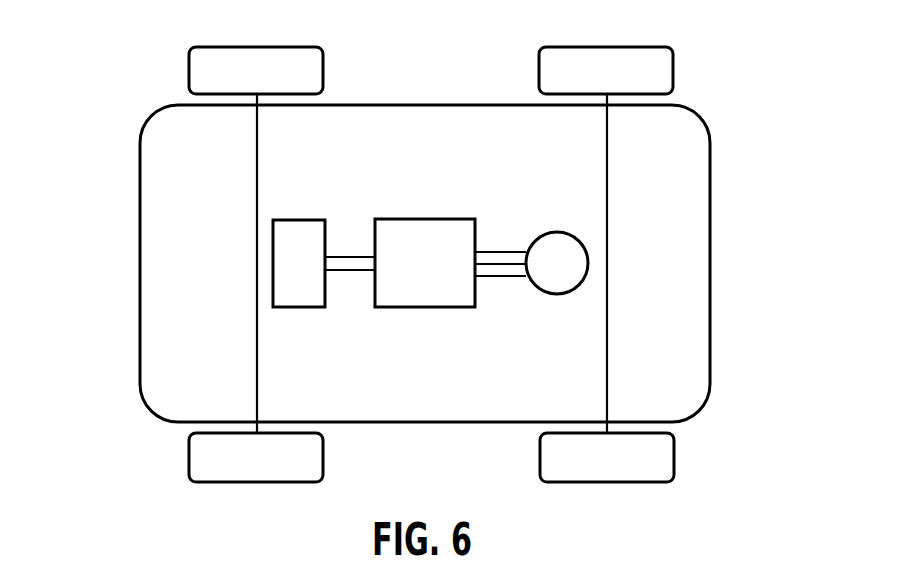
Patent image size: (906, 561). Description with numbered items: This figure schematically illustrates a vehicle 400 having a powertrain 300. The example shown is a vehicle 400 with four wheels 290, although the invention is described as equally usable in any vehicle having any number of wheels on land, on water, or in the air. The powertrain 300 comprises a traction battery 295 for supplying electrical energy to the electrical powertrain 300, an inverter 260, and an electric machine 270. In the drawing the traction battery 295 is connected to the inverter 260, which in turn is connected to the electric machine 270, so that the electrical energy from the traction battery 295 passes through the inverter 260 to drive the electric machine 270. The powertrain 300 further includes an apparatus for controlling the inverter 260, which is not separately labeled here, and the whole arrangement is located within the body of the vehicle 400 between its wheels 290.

The vehicle 400 is at (128, 79).
The wheels 290 is at (314, 72).
The traction battery 295 is at (302, 240).
The inverter 260 is at (432, 240).
The electric machine 270 is at (556, 247).
The powertrain 300 is at (538, 316).